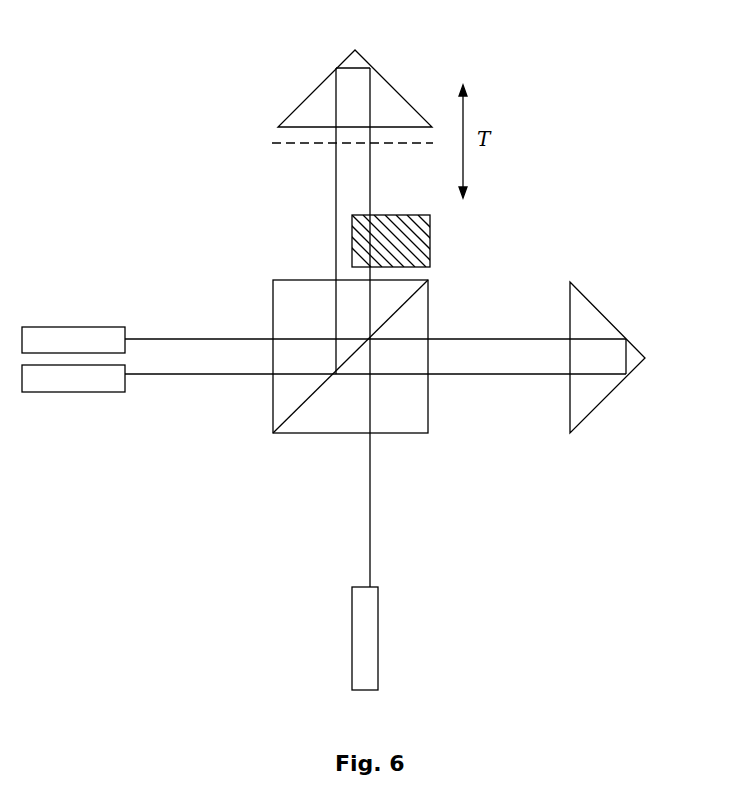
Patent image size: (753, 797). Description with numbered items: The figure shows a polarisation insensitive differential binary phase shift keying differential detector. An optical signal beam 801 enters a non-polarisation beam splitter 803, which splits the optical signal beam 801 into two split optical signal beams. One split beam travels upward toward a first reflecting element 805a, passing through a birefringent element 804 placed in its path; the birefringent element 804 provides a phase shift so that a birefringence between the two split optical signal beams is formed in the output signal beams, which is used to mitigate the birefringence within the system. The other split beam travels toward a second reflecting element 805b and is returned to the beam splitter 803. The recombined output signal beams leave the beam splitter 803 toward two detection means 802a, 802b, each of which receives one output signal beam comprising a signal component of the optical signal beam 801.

The optical signal beam 801 is at (73, 378).
The detection means 802a is at (73, 340).
The detection means 802b is at (371, 638).
The non-polarisation beam splitter 803 is at (425, 430).
The birefringent element 804 is at (428, 262).
The first retroreflector prism 805a is at (367, 62).
The second retroreflector prism 805b is at (597, 407).